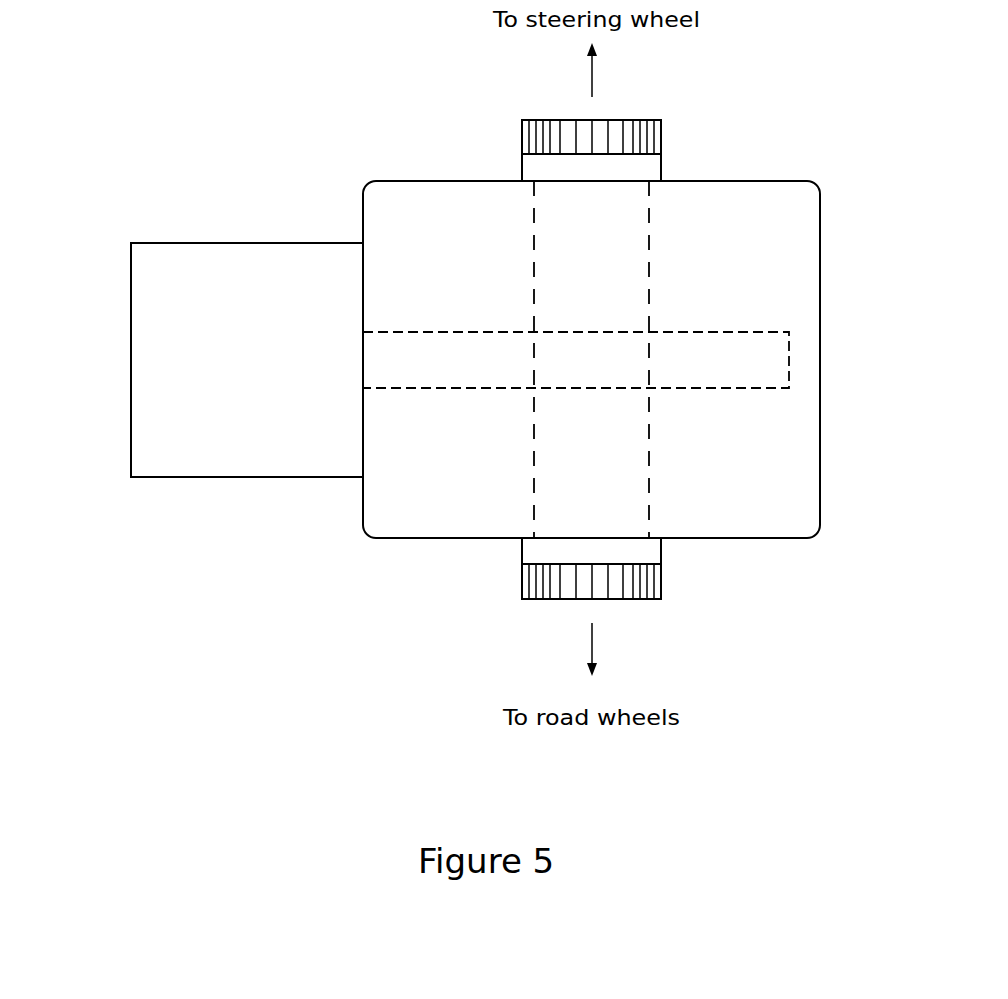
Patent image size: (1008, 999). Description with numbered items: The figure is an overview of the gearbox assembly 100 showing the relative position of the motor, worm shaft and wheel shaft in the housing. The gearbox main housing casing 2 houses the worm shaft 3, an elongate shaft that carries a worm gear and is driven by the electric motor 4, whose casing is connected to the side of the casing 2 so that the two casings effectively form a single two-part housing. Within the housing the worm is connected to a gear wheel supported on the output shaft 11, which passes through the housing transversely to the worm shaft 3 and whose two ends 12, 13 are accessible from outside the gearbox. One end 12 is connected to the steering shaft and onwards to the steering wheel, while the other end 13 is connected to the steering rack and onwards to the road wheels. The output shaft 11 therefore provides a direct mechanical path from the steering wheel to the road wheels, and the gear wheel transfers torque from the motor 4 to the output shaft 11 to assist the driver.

The gearbox main housing casing 2 is at (819, 487).
The worm shaft 3 is at (750, 330).
The electric motor 4 is at (131, 430).
The output shaft 11 is at (649, 245).
The end of output shaft 12 is at (661, 147).
The end of output shaft 13 is at (661, 592).
The gearbox assembly 100 is at (340, 561).